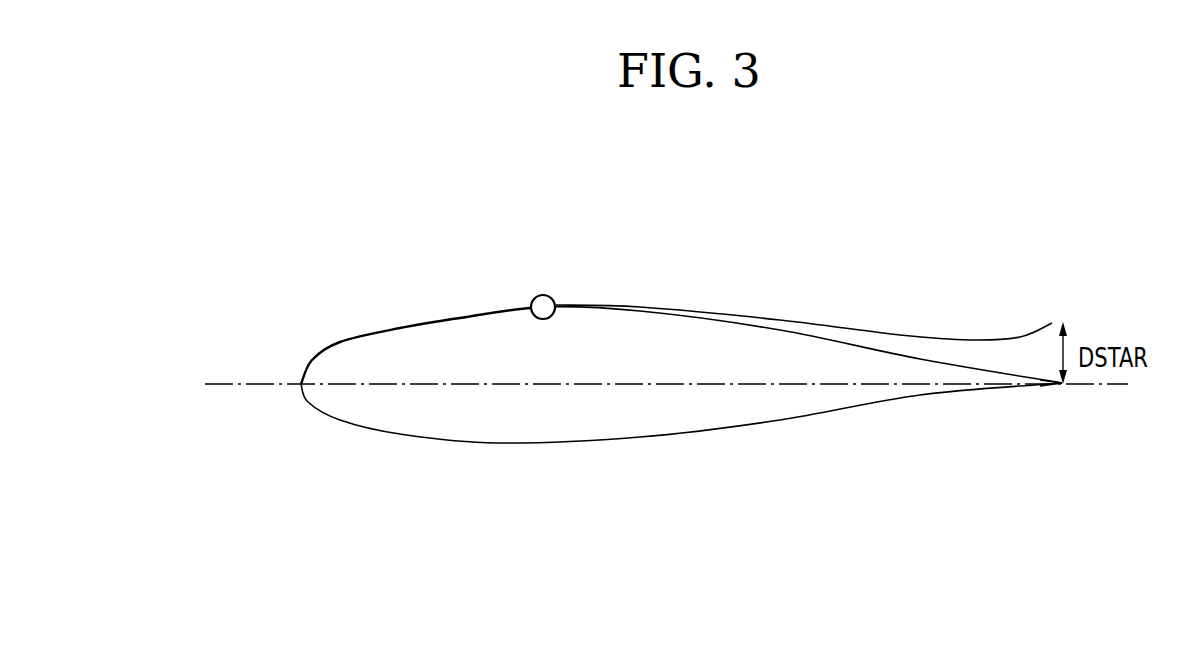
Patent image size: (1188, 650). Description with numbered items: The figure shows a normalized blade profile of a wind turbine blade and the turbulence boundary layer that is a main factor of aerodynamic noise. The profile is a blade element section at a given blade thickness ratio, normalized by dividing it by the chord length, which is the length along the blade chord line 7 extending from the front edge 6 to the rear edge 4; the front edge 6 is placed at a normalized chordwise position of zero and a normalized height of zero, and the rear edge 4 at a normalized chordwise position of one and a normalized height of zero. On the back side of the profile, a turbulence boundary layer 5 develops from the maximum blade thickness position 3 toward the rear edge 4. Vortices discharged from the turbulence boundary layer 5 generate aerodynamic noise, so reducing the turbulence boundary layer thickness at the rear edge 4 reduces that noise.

The maximum blade thickness position 3 is at (544, 294).
The rear edge 4 is at (1048, 385).
The turbulence boundary layer 5 is at (953, 338).
The front edge 6 is at (300, 388).
The blade chord line 7 is at (242, 384).